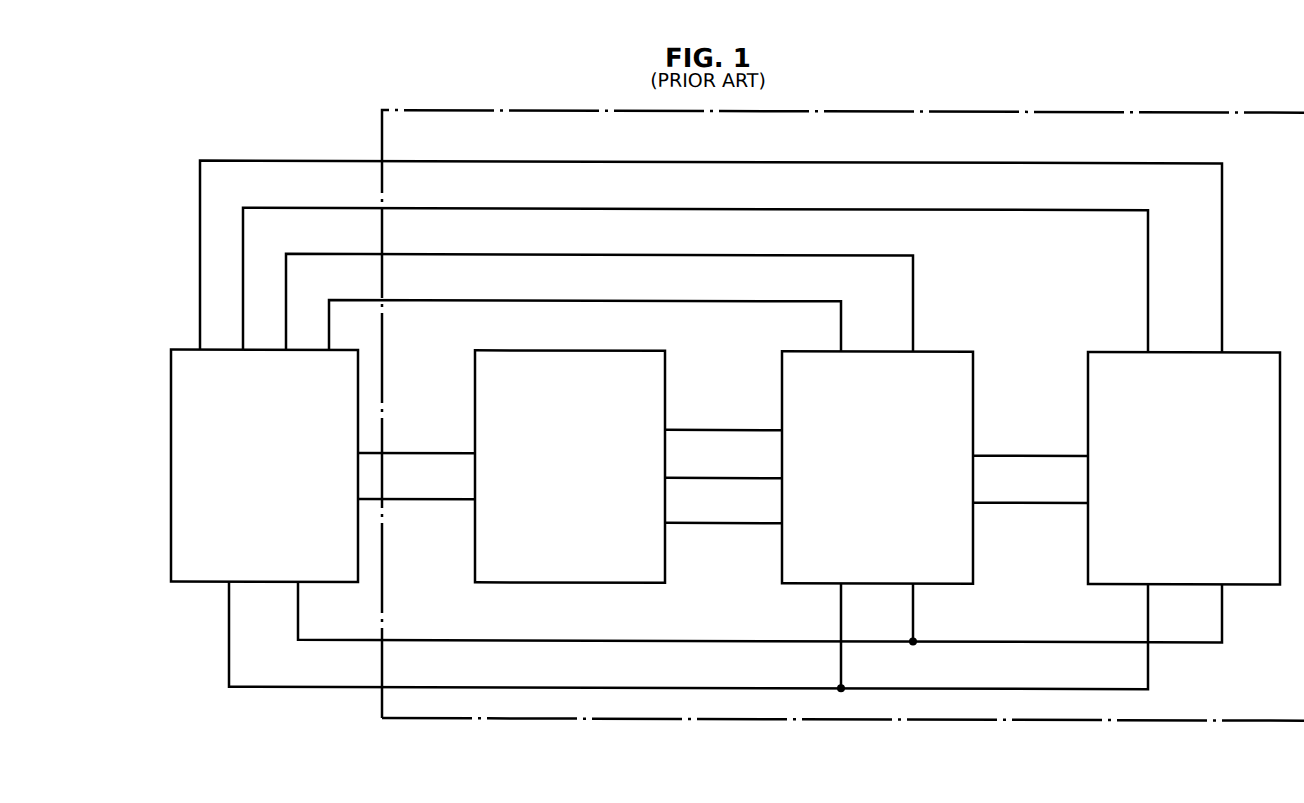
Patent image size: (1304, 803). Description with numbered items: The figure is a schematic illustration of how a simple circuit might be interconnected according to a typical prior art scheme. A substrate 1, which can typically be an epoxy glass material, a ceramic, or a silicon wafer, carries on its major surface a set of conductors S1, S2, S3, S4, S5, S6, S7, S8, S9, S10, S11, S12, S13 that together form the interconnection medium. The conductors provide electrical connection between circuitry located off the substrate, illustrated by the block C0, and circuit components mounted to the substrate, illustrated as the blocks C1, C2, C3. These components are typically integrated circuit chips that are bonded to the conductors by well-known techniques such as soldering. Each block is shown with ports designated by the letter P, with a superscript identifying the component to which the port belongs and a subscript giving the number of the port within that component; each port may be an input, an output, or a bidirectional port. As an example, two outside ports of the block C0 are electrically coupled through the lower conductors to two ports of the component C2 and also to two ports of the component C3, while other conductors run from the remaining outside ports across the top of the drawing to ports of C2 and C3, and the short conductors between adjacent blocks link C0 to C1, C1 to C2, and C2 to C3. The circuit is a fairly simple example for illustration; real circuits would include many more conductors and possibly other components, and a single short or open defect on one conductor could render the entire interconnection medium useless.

The substrate 1 is at (429, 117).
The block representing circuitry off the substrate C0 is at (264, 465).
The circuit component C1 is at (570, 466).
The circuit component C2 is at (877, 467).
The circuit component C3 is at (1184, 468).
The conductor S1 is at (442, 452).
The conductor S2 is at (442, 498).
The conductor S3 is at (691, 428).
The conductor S4 is at (691, 476).
The conductor S5 is at (691, 521).
The conductor S6 is at (1002, 453).
The conductor S7 is at (1002, 500).
The conductor S8 is at (621, 253).
The conductor S9 is at (622, 299).
The conductor S10 is at (631, 160).
The conductor S11 is at (629, 207).
The conductor S12 is at (559, 639).
The conductor S13 is at (559, 686).